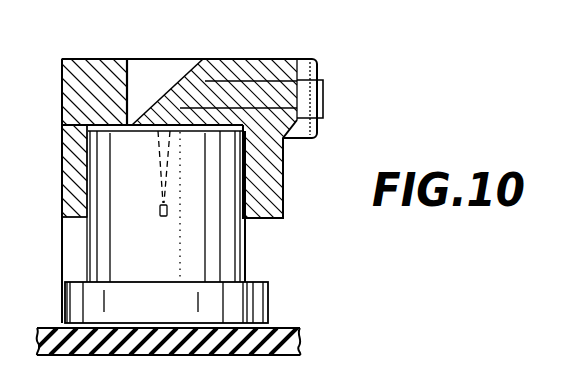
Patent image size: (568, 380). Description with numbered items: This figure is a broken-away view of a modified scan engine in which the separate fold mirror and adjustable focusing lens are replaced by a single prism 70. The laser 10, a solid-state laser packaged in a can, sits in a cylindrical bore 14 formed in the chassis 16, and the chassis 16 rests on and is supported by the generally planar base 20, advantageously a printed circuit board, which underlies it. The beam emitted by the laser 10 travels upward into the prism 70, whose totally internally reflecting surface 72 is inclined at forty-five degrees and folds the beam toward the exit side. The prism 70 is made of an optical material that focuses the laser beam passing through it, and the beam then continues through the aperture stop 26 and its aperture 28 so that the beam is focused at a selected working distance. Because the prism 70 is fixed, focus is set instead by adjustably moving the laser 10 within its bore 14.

The light source 10 is at (192, 233).
The cylindrical bore 14 is at (108, 136).
The chassis 16 is at (80, 79).
The base 20 is at (302, 340).
The aperture stop 26 is at (312, 58).
The aperture 28 is at (323, 92).
The prism 70 is at (227, 68).
The totally internally reflecting surface 72 is at (179, 90).